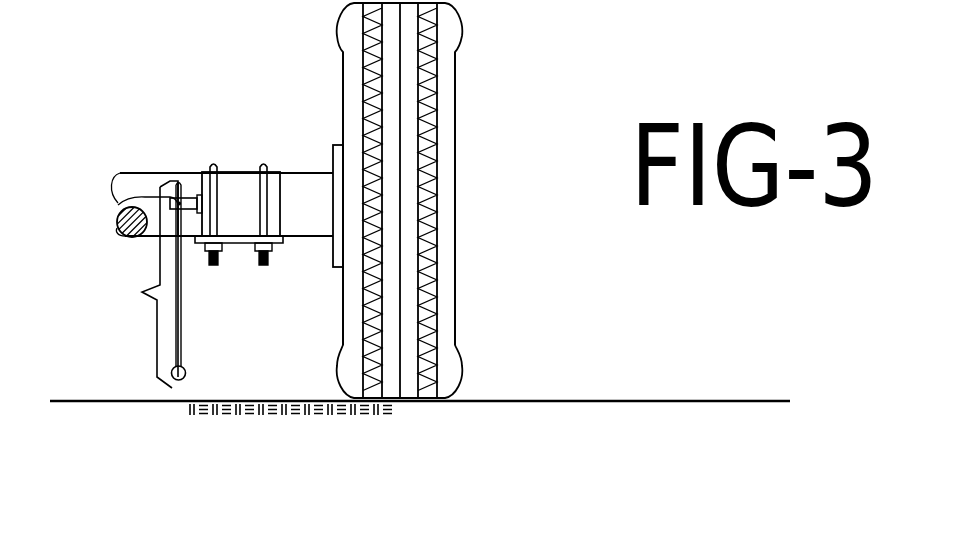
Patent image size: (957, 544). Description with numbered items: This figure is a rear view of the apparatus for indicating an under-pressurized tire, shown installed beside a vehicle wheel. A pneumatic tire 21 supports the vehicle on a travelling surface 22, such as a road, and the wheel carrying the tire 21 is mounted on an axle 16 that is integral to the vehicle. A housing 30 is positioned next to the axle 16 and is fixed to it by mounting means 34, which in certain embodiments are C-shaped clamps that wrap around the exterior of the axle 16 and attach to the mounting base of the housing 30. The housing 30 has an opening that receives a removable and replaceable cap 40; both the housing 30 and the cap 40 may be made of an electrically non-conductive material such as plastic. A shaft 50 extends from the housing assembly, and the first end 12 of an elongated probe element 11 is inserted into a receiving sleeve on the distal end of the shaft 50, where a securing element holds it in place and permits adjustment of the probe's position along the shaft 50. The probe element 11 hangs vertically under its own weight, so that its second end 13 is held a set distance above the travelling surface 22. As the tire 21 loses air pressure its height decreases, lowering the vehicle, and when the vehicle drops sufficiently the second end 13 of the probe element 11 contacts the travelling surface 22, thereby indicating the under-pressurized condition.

The probe element 11 is at (142, 292).
The first end 12 is at (177, 180).
The second end 13 is at (186, 372).
The axle 16 is at (314, 223).
The pneumatic tire 21 is at (456, 322).
The travelling surface 22 is at (388, 467).
The housing 30 is at (244, 216).
The mounting means 34 is at (212, 165).
The cap 40 is at (203, 171).
The shaft 50 is at (118, 205).